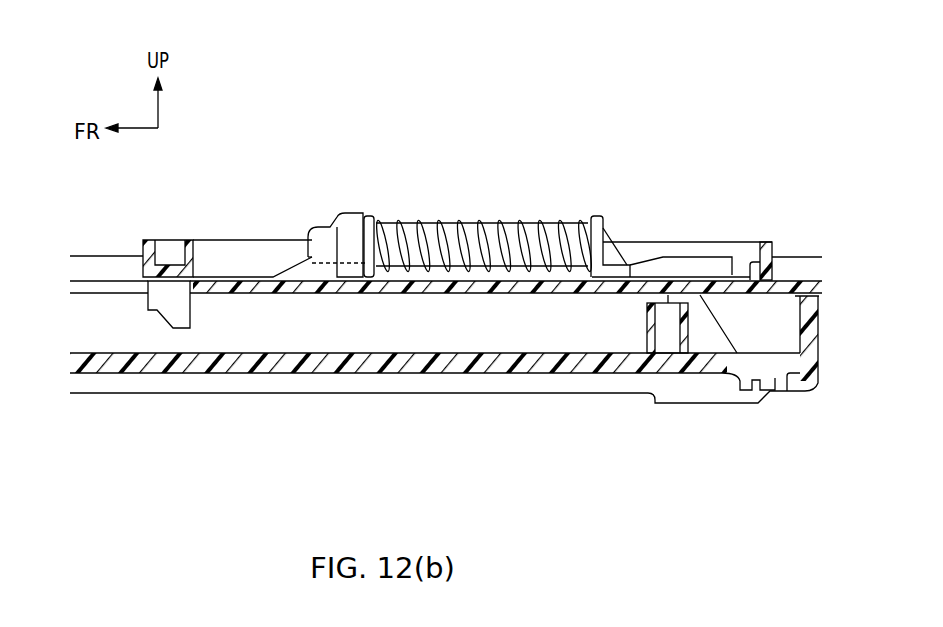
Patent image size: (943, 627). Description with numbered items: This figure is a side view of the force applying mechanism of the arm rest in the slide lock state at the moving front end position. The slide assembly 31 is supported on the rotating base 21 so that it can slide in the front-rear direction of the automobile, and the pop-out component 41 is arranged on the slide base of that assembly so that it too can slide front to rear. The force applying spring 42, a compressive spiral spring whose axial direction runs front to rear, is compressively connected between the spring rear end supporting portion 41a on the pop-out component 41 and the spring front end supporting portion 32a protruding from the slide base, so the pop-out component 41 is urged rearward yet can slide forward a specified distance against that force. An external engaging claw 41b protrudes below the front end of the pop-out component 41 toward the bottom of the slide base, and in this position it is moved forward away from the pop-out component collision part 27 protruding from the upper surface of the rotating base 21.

The rotating base 21 is at (110, 352).
The pop-out component collision part 27 is at (649, 332).
The slide assembly 31 is at (101, 296).
The spring front end supporting portion 32a is at (354, 214).
The pop-out component 41 is at (148, 240).
The spring rear end supporting portion 41a is at (599, 216).
The external engaging claw 41b is at (178, 318).
The force applying spring 42 is at (470, 216).